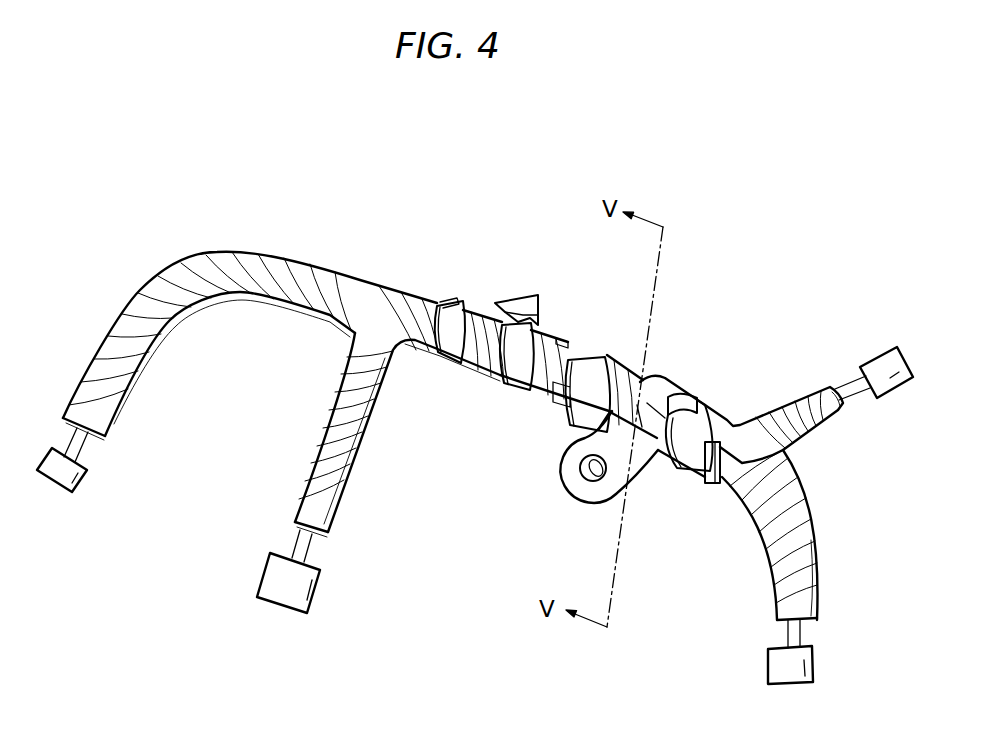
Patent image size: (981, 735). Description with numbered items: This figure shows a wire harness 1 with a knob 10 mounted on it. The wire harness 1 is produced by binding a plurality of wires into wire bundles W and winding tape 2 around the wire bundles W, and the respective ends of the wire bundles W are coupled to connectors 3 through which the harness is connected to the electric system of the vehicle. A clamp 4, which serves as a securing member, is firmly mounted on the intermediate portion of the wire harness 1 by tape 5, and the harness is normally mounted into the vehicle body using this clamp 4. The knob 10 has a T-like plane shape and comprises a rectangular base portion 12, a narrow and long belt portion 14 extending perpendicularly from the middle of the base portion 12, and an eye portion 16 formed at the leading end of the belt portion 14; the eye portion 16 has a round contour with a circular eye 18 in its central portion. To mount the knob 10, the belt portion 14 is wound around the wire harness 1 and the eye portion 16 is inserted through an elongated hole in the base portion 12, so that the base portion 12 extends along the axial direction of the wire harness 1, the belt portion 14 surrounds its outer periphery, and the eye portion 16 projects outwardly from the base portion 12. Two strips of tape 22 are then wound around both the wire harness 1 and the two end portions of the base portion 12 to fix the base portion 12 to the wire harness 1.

The wire harness 1 is at (404, 243).
The tape 2 is at (270, 256).
The connectors 3 is at (80, 488).
The clamp 4 is at (518, 290).
The tape 5 is at (442, 334).
The knob 10 is at (548, 508).
The base portion 12 is at (660, 447).
The belt portion 14 is at (661, 386).
The eye portion 16 is at (588, 496).
The eye 18 is at (580, 470).
The tape 22 is at (599, 366).
The wire bundles W is at (82, 446).